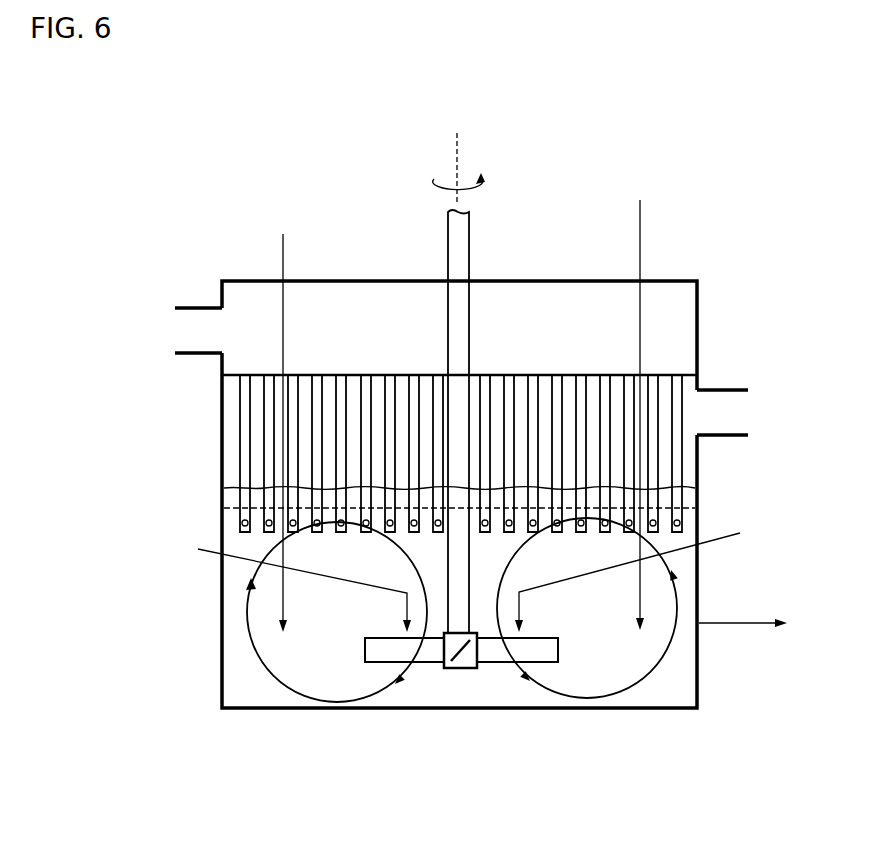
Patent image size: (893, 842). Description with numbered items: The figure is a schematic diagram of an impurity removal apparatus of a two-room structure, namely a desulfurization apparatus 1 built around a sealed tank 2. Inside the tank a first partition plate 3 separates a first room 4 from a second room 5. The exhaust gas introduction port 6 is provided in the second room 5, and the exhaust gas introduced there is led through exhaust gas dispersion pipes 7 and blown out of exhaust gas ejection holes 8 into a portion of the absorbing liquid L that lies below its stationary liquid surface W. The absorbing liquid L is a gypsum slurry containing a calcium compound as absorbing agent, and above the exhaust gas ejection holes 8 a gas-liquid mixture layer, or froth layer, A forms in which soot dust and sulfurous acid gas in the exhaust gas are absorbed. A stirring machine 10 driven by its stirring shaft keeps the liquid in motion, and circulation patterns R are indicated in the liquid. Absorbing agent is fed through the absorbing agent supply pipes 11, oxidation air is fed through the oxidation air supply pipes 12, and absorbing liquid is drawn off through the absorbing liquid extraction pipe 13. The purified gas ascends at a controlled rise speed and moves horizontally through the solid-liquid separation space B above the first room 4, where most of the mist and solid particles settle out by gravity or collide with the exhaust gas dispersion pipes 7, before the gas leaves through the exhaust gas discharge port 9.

The desulfurization apparatus 1 is at (250, 272).
The sealed tank 2 is at (360, 280).
The first partition plate 3 is at (222, 400).
The first room 4 is at (245, 575).
The second room 5 is at (248, 358).
The exhaust gas introduction port 6 is at (223, 336).
The exhaust gas dispersion pipe 7 is at (240, 432).
The exhaust gas ejection hole 8 is at (228, 523).
The exhaust gas discharge port 9 is at (700, 412).
The stirring machine 10 is at (461, 697).
The absorbing agent supply pipe 11 is at (198, 549).
The oxidation air supply pipe 12 is at (283, 234).
The absorbing liquid extraction pipe 13 is at (766, 630).
The gas-liquid mixture layer (froth layer) A is at (713, 485).
The solid-liquid separation space B is at (665, 436).
The stationary liquid surface W is at (592, 530).
The absorbing liquid L is at (605, 608).
The right circulation flow R is at (248, 632).